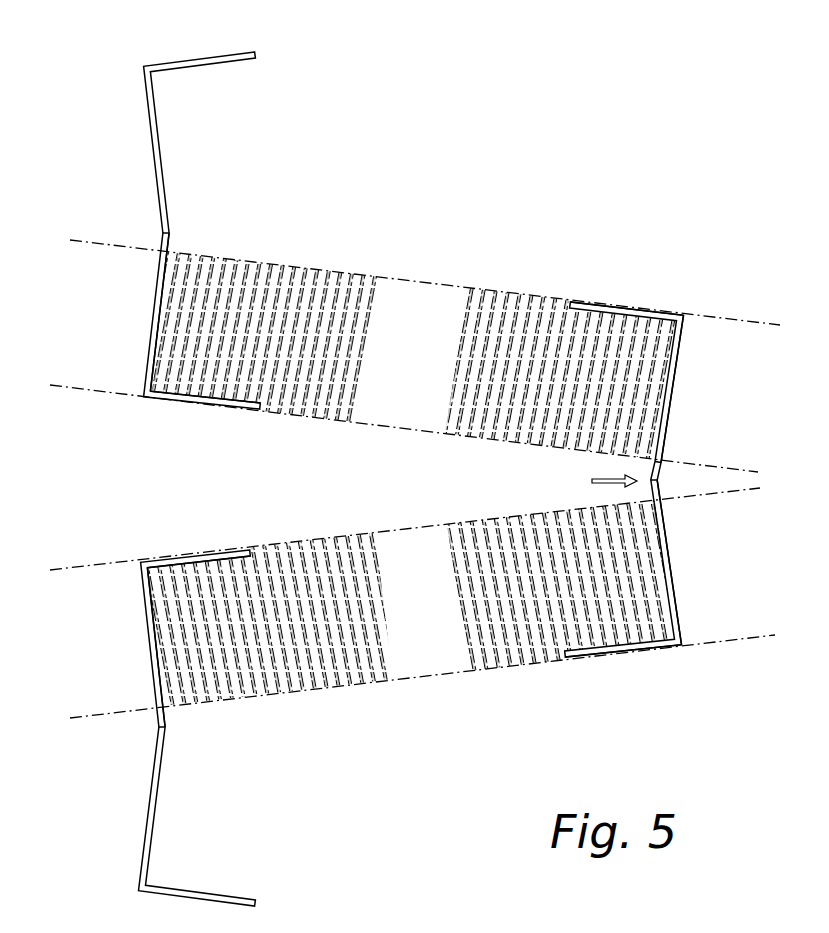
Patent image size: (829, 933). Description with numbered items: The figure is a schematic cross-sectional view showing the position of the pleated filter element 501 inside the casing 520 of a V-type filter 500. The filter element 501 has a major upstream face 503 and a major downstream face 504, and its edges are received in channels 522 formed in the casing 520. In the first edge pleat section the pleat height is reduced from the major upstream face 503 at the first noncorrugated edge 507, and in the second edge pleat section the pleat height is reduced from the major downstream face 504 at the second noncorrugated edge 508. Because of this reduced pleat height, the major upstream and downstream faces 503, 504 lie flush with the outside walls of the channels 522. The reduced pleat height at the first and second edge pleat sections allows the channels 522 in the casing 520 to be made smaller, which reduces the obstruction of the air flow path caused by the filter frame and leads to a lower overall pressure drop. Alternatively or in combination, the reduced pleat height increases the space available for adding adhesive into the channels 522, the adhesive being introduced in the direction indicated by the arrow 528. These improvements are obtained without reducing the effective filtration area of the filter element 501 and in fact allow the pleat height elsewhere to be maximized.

The V-type filter 500 is at (95, 62).
The pleated filter element 501 is at (463, 308).
The major upstream face 503 is at (393, 425).
The major downstream face 504 is at (400, 276).
The first noncorrugated edge 507 is at (165, 313).
The second noncorrugated edge 508 is at (660, 415).
The casing 520 is at (148, 108).
The channels 522 is at (633, 316).
The arrow 528 is at (594, 478).